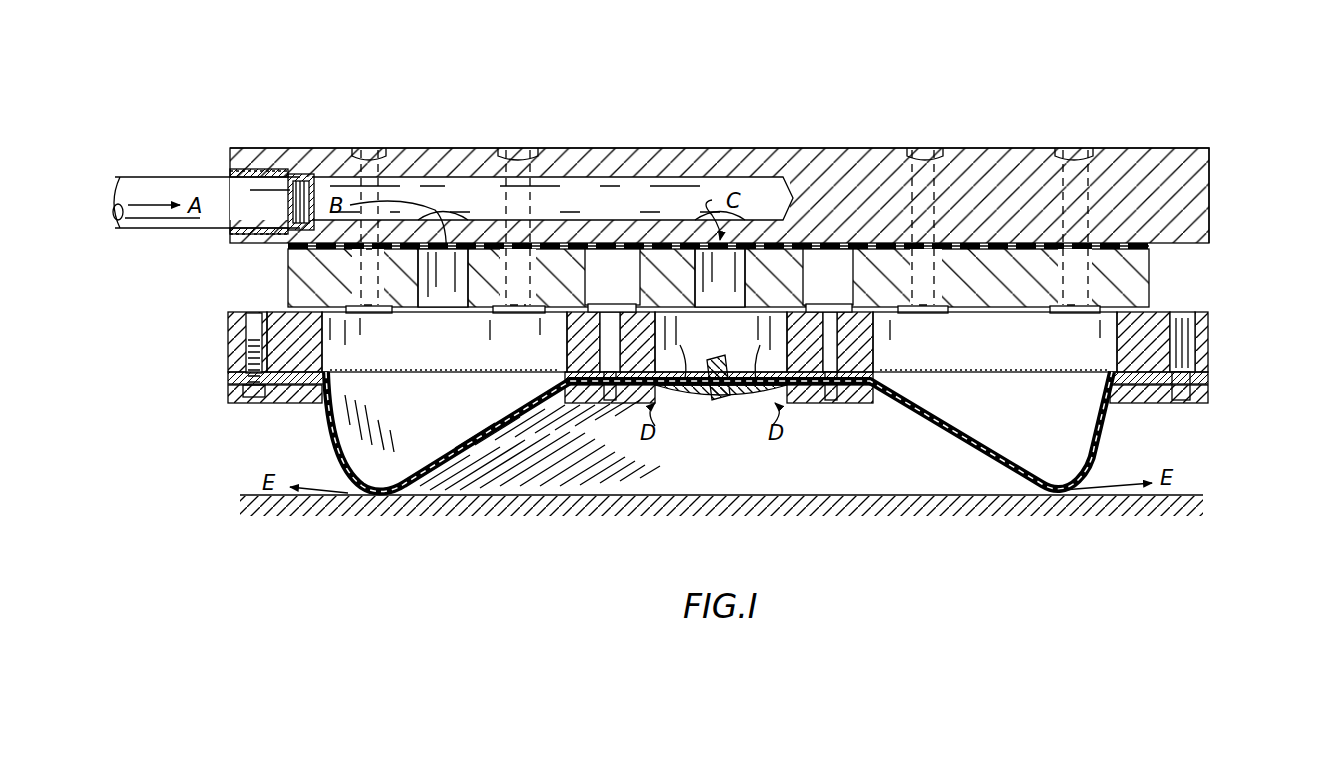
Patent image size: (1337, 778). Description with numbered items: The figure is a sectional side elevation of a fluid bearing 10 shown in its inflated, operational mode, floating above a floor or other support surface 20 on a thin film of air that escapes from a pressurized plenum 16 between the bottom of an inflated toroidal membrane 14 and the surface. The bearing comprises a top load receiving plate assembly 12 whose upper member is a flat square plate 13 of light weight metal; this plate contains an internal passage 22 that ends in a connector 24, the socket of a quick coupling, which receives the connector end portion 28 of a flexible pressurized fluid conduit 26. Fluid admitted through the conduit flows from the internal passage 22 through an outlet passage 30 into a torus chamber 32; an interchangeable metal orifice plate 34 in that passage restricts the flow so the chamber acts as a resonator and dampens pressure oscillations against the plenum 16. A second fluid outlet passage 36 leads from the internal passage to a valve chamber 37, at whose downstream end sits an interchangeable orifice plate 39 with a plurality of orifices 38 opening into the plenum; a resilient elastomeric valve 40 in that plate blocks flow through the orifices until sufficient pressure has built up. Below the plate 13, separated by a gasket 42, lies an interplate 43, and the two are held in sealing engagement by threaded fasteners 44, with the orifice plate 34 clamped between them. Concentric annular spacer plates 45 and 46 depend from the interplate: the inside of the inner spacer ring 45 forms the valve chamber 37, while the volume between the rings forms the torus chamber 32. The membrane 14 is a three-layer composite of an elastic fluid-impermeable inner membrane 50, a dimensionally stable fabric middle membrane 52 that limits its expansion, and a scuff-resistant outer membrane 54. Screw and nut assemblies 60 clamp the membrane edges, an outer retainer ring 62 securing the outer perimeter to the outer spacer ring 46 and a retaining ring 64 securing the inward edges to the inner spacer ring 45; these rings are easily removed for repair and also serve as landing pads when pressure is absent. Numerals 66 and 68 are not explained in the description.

The fluid bearing 10 is at (1268, 127).
The top load receiving plate assembly 12 is at (1163, 147).
The flat square plate 13 is at (1211, 184).
The inflated toroidal membrane 14 is at (1110, 445).
The pressurized plenum 16 is at (732, 476).
The support surface 20 is at (948, 542).
The internal passage 22 is at (552, 198).
The connector 24 is at (315, 176).
The flexible pressurized fluid conduit 26 is at (162, 180).
The connector end portion 28 is at (290, 172).
The outlet passage 30 is at (421, 205).
The torus chamber 32 is at (440, 357).
The orifice plate 34 is at (443, 260).
The second fluid outlet passage 36 is at (730, 296).
The valve chamber 37 is at (728, 341).
The orifices 38 is at (683, 385).
The orifice plate 39 is at (660, 398).
The valve 40 is at (718, 400).
The gasket 42 is at (1151, 245).
The interplate 43 is at (1138, 272).
The threaded fasteners 44 is at (370, 148).
The spacer plate 45 is at (567, 330).
The spacer plate 46 is at (320, 338).
The inner membrane 50 is at (935, 400).
The middle membrane 52 is at (1022, 420).
The outer membrane 54 is at (960, 442).
The screw and nut assemblies 60 is at (248, 312).
The outer retainer ring 62 is at (1208, 386).
The retaining ring 64 is at (858, 403).
The clamp block 66 is at (1155, 403).
The diaphragm inner surface 68 is at (577, 400).